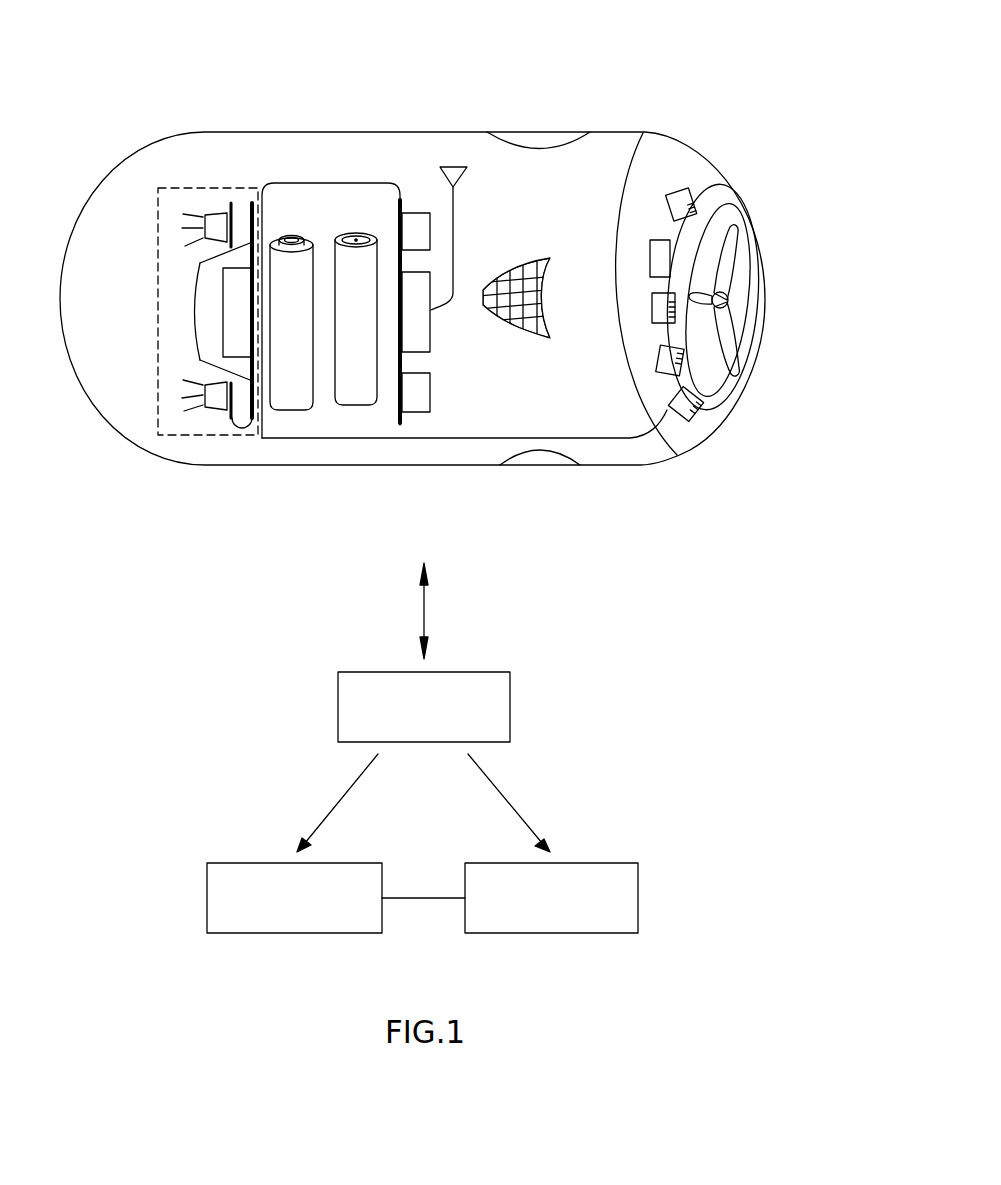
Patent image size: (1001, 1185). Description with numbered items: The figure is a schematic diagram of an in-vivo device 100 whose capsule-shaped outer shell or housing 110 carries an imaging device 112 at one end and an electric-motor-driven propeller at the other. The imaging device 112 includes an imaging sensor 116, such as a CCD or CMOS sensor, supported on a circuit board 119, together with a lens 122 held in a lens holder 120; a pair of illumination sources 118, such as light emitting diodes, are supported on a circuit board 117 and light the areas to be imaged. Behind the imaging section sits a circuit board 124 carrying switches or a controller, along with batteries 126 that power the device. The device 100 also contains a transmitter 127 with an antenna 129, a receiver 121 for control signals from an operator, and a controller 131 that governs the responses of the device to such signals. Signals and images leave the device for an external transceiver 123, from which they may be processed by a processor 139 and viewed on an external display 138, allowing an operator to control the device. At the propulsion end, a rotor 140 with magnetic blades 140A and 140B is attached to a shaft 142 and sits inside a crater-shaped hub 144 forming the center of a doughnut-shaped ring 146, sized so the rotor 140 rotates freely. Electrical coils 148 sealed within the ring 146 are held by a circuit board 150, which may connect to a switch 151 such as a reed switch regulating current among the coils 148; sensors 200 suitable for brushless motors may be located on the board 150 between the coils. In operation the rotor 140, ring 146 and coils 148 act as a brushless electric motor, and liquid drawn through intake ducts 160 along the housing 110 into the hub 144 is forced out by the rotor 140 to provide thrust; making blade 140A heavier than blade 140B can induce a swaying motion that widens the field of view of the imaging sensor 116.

The device 100 is at (166, 45).
The housing 110 is at (203, 132).
The imaging device 112 is at (153, 398).
The imaging sensor 116 is at (227, 310).
The circuit board 117 is at (236, 428).
The illumination sources 118 is at (220, 215).
The circuit board 119 is at (247, 224).
The lens holder 120 is at (253, 253).
The receiver 121 is at (413, 413).
The lens 122 is at (194, 298).
The external transceiver 123 is at (445, 672).
The circuit board 124 is at (400, 222).
The batteries 126 is at (350, 407).
The transmitter 127 is at (430, 327).
The antenna 129 is at (453, 166).
The controller 131 is at (402, 203).
The external display 138 is at (567, 863).
The processor 139 is at (313, 863).
The rotor 140 is at (767, 302).
The blade 140A is at (737, 372).
The blade 140B is at (733, 249).
The shaft 142 is at (729, 286).
The hub 144 is at (740, 327).
The ring 146 is at (723, 184).
The electrical coils 148 is at (688, 189).
The circuit board 150 is at (656, 240).
The switch 151 is at (670, 258).
The intake ducts 160 is at (513, 267).
The sensors 200 is at (653, 372).